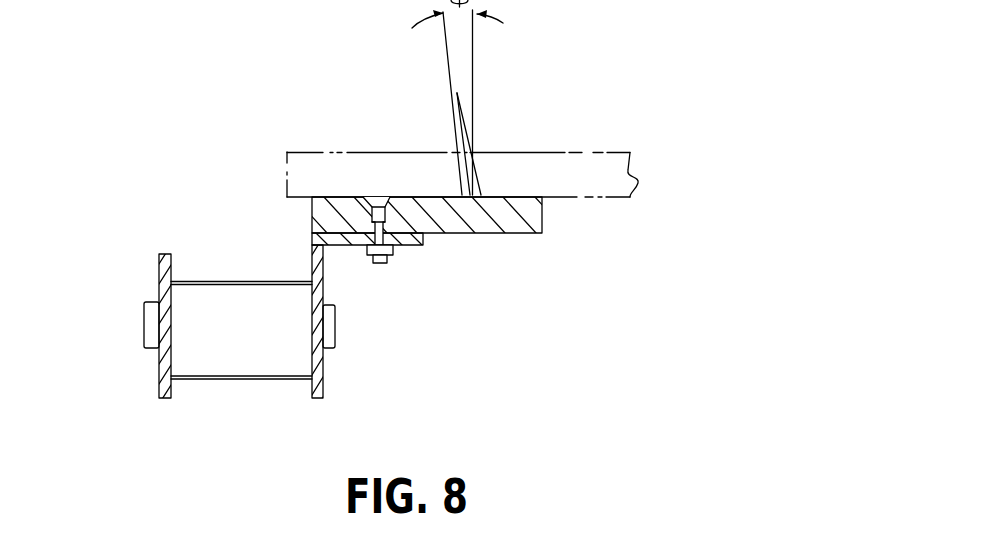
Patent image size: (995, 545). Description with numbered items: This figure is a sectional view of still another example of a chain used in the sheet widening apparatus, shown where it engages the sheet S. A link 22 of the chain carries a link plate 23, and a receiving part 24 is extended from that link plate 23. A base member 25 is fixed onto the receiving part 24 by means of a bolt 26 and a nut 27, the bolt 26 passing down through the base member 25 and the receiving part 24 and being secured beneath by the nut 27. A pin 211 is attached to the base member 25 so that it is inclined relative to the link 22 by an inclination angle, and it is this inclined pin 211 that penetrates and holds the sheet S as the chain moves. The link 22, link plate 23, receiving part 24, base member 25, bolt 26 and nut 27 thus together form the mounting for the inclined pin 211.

The sheet material S is at (570, 167).
The pin 211 is at (473, 142).
The link 22 is at (306, 402).
The link plate 23 is at (159, 392).
The receiving part 24 is at (415, 240).
The base member 25 is at (532, 218).
The bolt 26 is at (380, 202).
The nut 27 is at (393, 255).